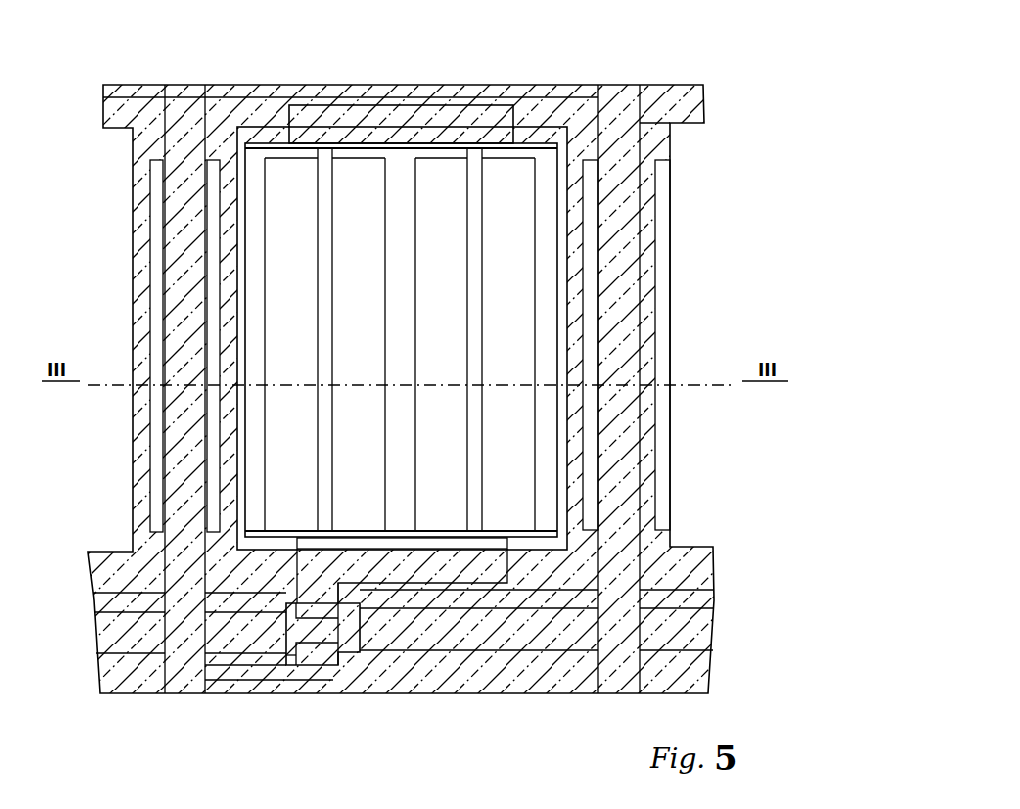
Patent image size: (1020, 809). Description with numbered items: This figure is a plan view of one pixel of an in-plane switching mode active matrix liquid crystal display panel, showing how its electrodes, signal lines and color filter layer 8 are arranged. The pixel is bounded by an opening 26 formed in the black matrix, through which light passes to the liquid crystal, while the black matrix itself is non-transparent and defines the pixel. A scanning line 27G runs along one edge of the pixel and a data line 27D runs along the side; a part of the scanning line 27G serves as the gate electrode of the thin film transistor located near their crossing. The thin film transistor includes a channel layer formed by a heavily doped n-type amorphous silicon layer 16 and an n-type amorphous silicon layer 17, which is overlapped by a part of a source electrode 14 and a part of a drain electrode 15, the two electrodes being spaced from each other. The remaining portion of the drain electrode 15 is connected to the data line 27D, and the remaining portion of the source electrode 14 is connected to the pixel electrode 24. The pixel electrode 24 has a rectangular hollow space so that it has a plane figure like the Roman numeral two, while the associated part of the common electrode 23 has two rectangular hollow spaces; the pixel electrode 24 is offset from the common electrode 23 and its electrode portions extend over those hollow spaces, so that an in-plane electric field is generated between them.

The data line 27D is at (185, 100).
The color filter layer 8 is at (533, 137).
The opening 26 is at (567, 303).
The pixel electrode 24 is at (472, 347).
The common electrode 23 is at (408, 437).
The scanning line 27G is at (690, 627).
The source electrode 14 is at (288, 612).
The drain electrode 15 is at (323, 668).
The heavily doped n-type amorphous silicon layer 16 is at (360, 632).
The n-type amorphous silicon layer 17 is at (360, 632).